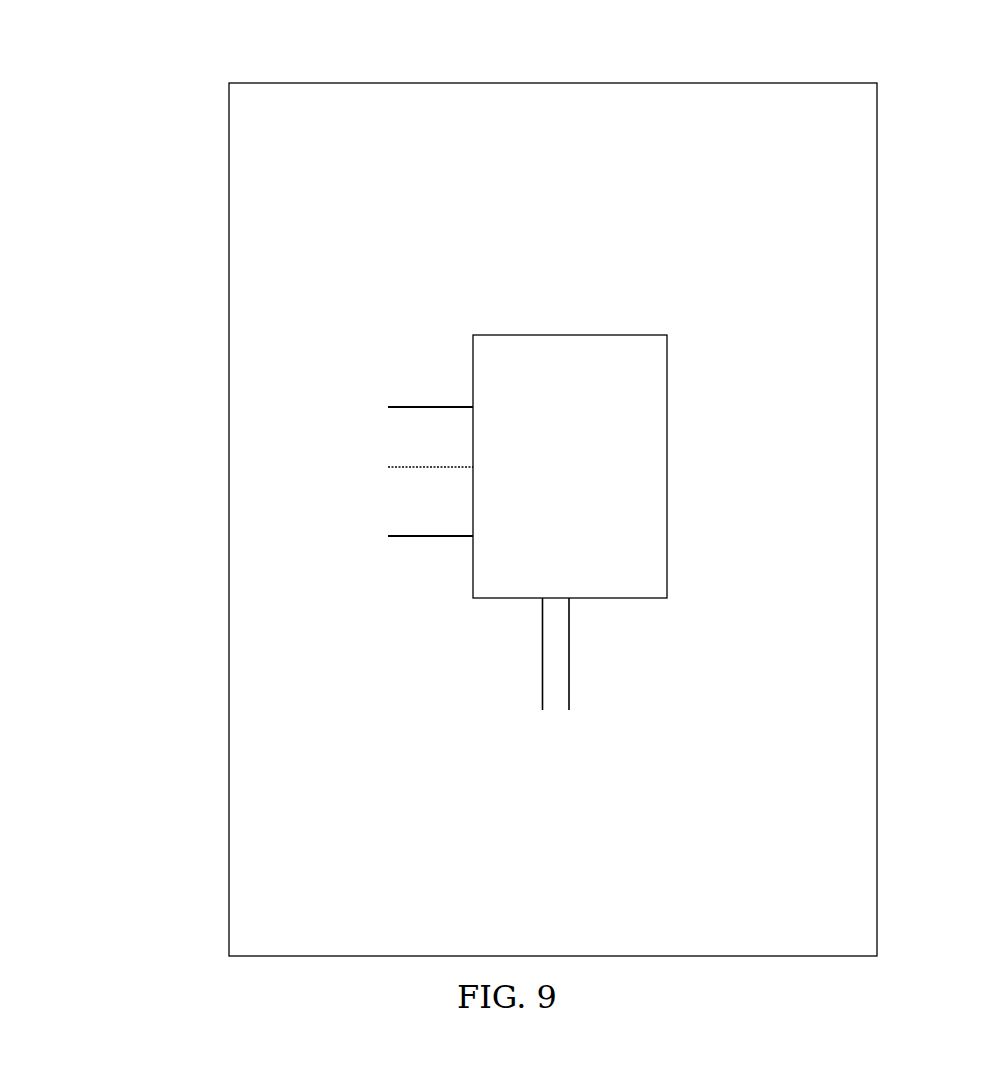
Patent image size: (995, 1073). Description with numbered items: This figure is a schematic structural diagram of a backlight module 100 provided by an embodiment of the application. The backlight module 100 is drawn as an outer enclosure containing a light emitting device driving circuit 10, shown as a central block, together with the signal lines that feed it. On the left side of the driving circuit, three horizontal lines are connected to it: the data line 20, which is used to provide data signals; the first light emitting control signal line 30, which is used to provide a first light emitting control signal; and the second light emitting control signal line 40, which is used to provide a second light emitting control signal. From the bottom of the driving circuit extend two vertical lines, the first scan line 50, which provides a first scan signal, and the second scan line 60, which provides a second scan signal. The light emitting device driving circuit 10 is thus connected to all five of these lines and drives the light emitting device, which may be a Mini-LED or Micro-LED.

The backlight module 100 is at (176, 74).
The light emitting device driving circuit 10 is at (642, 503).
The data line 20 is at (407, 410).
The first light emitting control signal line 30 is at (407, 474).
The second light emitting control signal line 40 is at (407, 542).
The first scan line 50 is at (535, 671).
The second scan line 60 is at (568, 671).